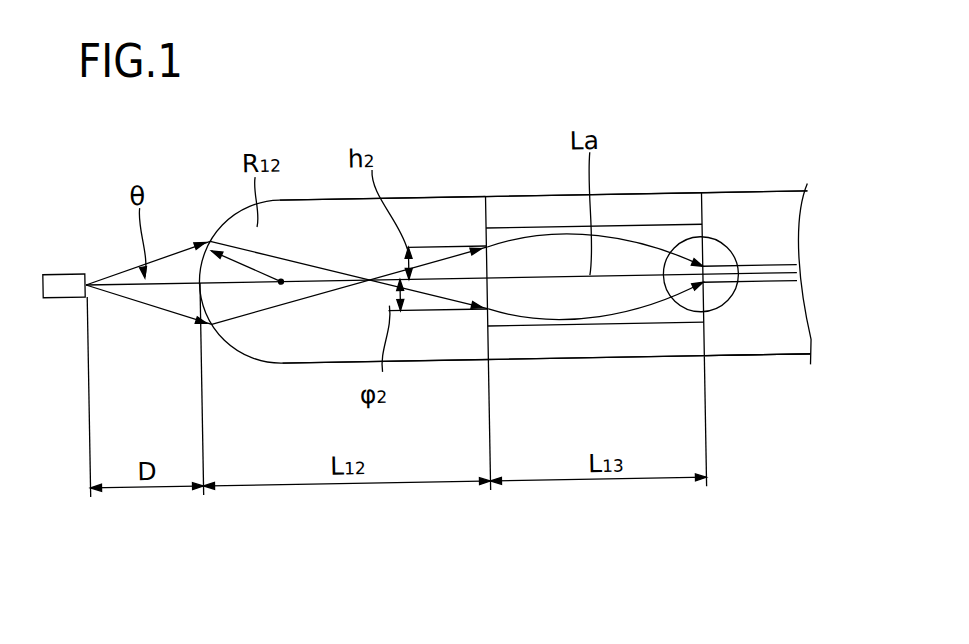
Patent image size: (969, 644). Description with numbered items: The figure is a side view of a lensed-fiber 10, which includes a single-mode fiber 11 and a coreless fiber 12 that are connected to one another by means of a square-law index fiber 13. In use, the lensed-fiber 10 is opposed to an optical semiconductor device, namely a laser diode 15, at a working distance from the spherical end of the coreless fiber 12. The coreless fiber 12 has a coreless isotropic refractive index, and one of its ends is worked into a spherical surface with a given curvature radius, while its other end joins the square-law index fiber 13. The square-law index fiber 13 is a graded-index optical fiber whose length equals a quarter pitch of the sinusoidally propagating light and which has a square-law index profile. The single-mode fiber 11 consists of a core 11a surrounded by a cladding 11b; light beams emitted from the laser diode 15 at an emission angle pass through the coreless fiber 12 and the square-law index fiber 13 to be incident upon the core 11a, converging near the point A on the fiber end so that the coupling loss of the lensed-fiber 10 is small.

The lensed-fiber 10 is at (407, 157).
The single-mode fiber 11 is at (779, 366).
The core 11a is at (763, 277).
The cladding 11b is at (744, 355).
The coreless fiber 12 is at (299, 367).
The square-law index fiber 13 is at (633, 357).
The laser diode 15 is at (63, 274).
The coupling point on fiber end face A is at (720, 252).